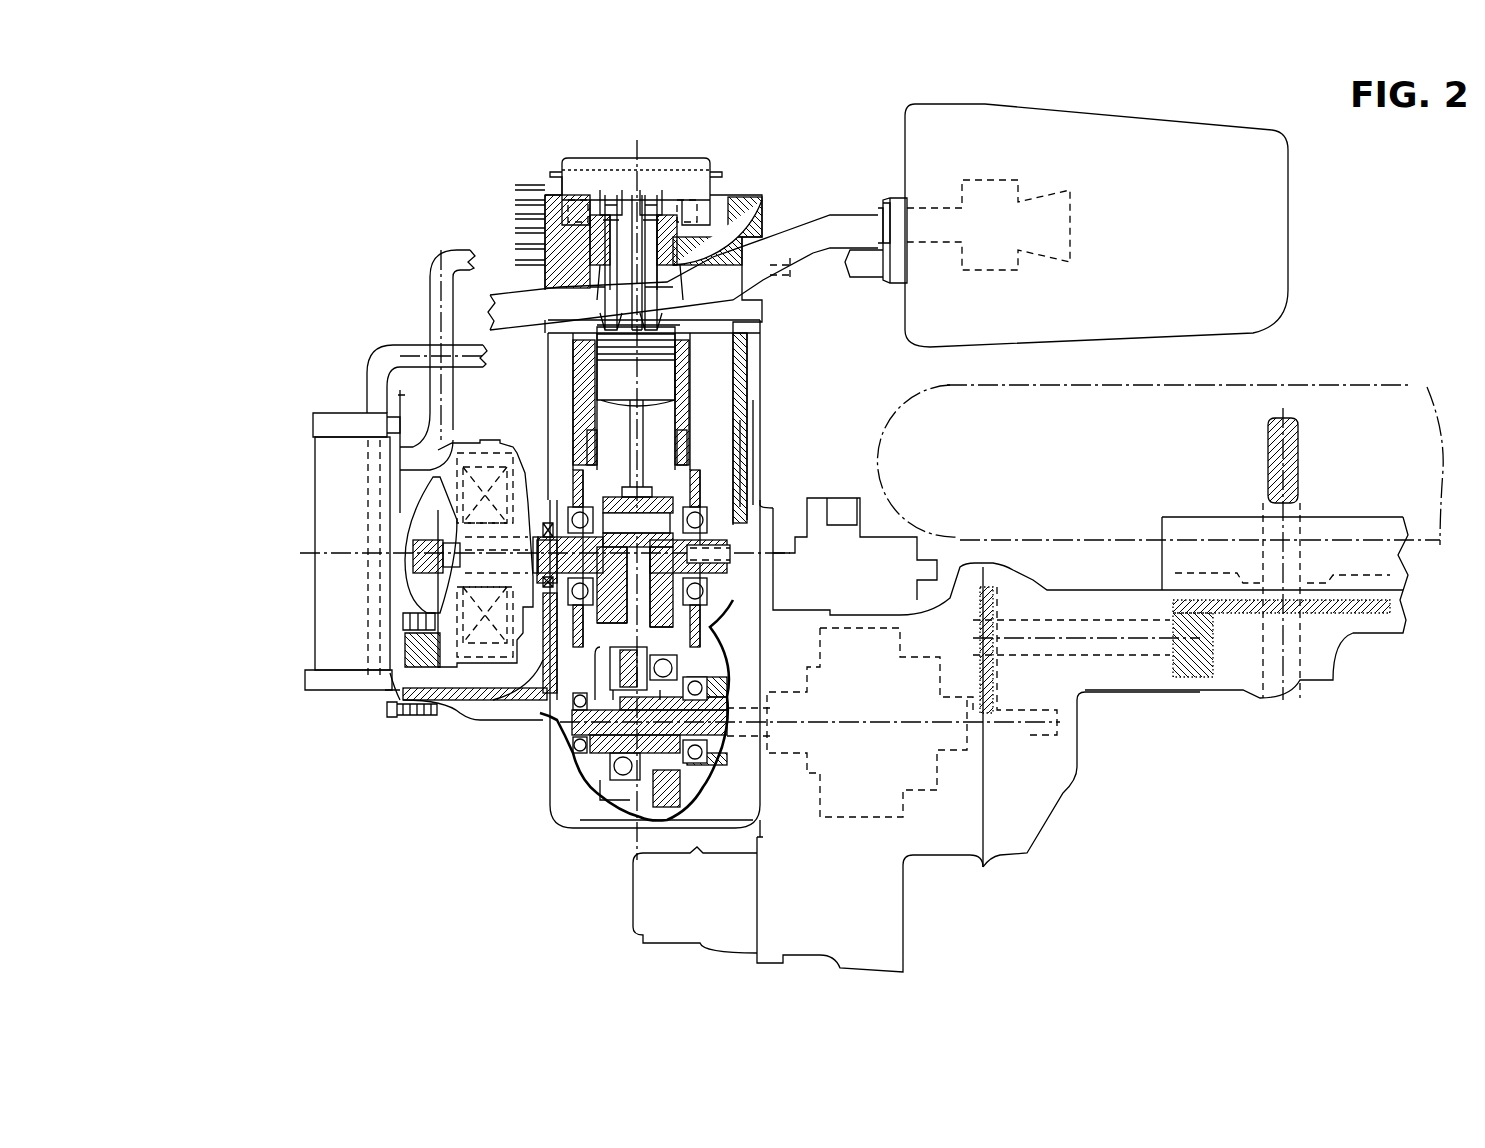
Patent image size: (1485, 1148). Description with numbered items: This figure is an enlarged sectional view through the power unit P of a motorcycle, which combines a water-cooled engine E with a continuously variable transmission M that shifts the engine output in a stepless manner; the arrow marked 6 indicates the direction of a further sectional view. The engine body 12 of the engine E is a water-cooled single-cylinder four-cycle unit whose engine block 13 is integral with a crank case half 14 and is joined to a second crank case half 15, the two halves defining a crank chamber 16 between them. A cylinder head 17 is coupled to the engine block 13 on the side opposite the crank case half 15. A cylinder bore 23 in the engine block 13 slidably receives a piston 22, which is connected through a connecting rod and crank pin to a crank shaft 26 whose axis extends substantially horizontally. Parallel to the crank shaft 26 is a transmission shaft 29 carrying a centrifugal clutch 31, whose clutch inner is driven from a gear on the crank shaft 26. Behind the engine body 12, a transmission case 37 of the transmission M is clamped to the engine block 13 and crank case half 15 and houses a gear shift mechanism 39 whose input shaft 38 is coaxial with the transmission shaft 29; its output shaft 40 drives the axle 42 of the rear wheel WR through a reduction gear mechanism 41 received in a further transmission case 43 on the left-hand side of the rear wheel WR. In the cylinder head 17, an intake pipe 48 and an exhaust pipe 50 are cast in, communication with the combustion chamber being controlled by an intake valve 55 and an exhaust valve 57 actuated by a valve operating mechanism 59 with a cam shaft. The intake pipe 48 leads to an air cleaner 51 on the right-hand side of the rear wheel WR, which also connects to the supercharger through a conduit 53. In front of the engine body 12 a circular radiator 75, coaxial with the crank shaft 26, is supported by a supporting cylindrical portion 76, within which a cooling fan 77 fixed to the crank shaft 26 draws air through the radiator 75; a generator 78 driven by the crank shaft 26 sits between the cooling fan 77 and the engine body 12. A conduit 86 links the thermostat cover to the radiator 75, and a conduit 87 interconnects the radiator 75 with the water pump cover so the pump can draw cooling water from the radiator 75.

The section view arrow 6 is at (272, 548).
The engine body 12 is at (512, 187).
The engine block 13 is at (753, 363).
The crank case half 14 is at (556, 445).
The crank case half 15 is at (575, 820).
The crank chamber 16 is at (545, 655).
The cylinder head 17 is at (560, 207).
The piston 22 is at (636, 366).
The cylinder bore 23 is at (690, 437).
The crank shaft 26 is at (557, 507).
The transmission shaft 29 is at (580, 715).
The centrifugal clutch 31 is at (583, 780).
The transmission case 37 is at (880, 930).
The input shaft 38 is at (700, 700).
The gear shift mechanism 39 is at (890, 828).
The output shaft 40 is at (1023, 737).
The reduction gear mechanism 41 is at (1102, 620).
The axle 42 is at (1268, 432).
The transmission case 43 is at (1140, 685).
The intake pipe 48 is at (790, 223).
The exhaust pipe 50 is at (512, 290).
The air cleaner 51 is at (1113, 249).
The conduit 53 is at (857, 255).
The intake valve 55 is at (700, 237).
The exhaust valve 57 is at (590, 215).
The valve operating mechanism 59 is at (655, 183).
The radiator 75 is at (333, 571).
The supporting cylindrical portion 76 is at (460, 713).
The cooling fan 77 is at (410, 487).
The generator 78 is at (458, 438).
The conduit 86 is at (393, 353).
The conduit 87 is at (433, 307).
The engine E is at (760, 480).
The power unit P is at (945, 405).
The continuously variable transmission M is at (947, 590).
The rear wheel WR is at (1335, 385).